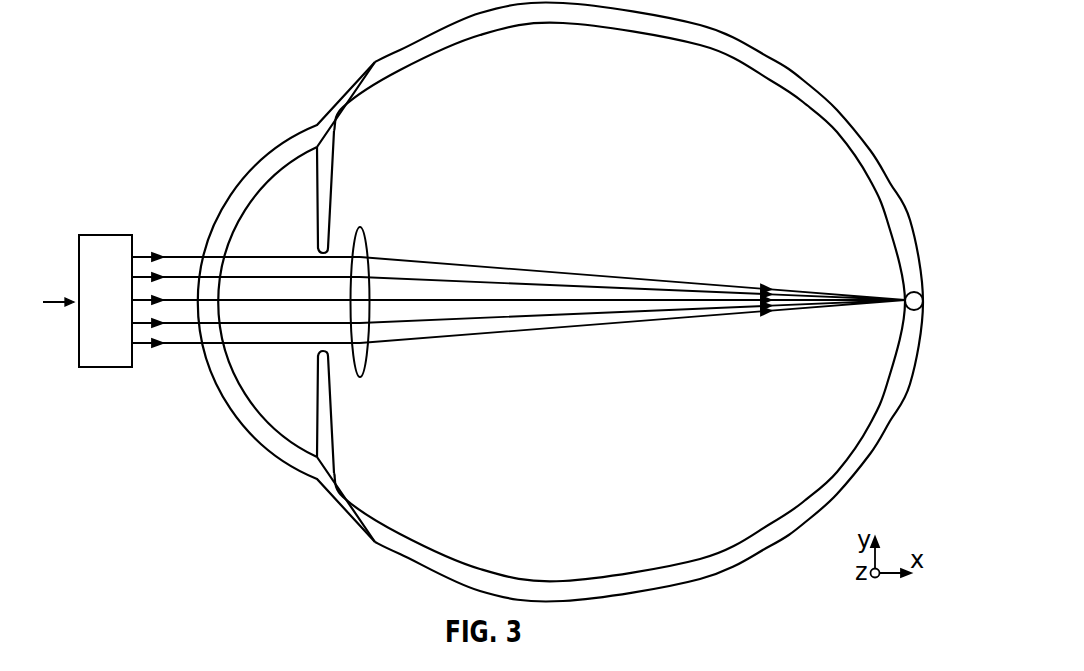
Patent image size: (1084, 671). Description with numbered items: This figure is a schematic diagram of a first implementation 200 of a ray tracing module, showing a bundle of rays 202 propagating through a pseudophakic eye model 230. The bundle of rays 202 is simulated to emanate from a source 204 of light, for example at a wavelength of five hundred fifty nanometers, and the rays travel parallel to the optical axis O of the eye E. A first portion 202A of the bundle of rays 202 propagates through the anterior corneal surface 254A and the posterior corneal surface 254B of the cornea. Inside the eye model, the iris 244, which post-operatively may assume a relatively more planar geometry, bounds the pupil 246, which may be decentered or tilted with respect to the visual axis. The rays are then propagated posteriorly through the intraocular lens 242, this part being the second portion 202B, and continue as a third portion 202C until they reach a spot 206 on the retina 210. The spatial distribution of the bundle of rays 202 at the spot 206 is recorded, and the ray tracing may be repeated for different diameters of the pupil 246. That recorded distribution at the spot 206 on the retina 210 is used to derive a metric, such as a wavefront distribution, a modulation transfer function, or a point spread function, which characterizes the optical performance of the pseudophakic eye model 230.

The first implementation 200 is at (156, 57).
The bundle of rays 202 is at (171, 360).
The first portion of the bundle of rays 202A is at (180, 245).
The second portion of the bundle of rays 202B is at (442, 254).
The third portion of the bundle of rays 202C is at (893, 288).
The source 204 is at (106, 368).
The spot 206 is at (914, 278).
The retina 210 is at (888, 397).
The pseudophakic eye model 230 is at (836, 32).
The intraocular lens 242 is at (367, 358).
The iris 244 is at (332, 413).
The pupil 246 is at (343, 244).
The anterior corneal surface 254A is at (233, 418).
The posterior corneal surface 254B is at (295, 448).
The eye E is at (872, 102).
The optical axis O is at (58, 289).